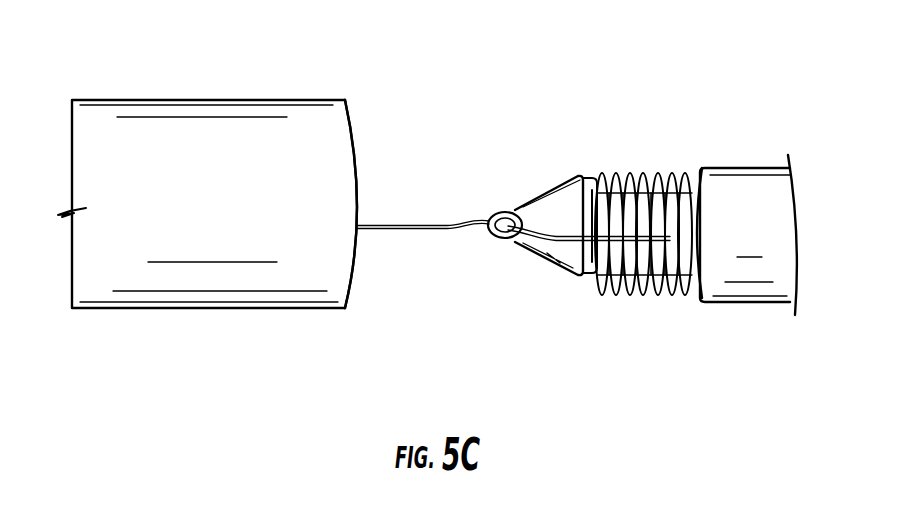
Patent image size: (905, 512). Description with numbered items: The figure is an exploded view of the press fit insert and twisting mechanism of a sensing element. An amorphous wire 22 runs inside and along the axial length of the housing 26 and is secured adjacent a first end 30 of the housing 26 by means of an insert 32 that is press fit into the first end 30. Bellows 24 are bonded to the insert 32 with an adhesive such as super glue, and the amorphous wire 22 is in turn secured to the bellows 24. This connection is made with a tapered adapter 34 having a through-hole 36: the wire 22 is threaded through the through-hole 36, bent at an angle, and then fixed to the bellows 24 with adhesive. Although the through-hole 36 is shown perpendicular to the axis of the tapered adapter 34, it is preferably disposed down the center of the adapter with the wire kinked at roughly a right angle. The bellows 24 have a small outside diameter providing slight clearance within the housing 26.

The amorphous wire 22 is at (408, 225).
The bellows 24 is at (658, 172).
The housing 26 is at (283, 108).
The first end 30 is at (347, 100).
The insert 32 is at (747, 182).
The tapered adapter 34 is at (548, 253).
The through-hole 36 is at (495, 240).